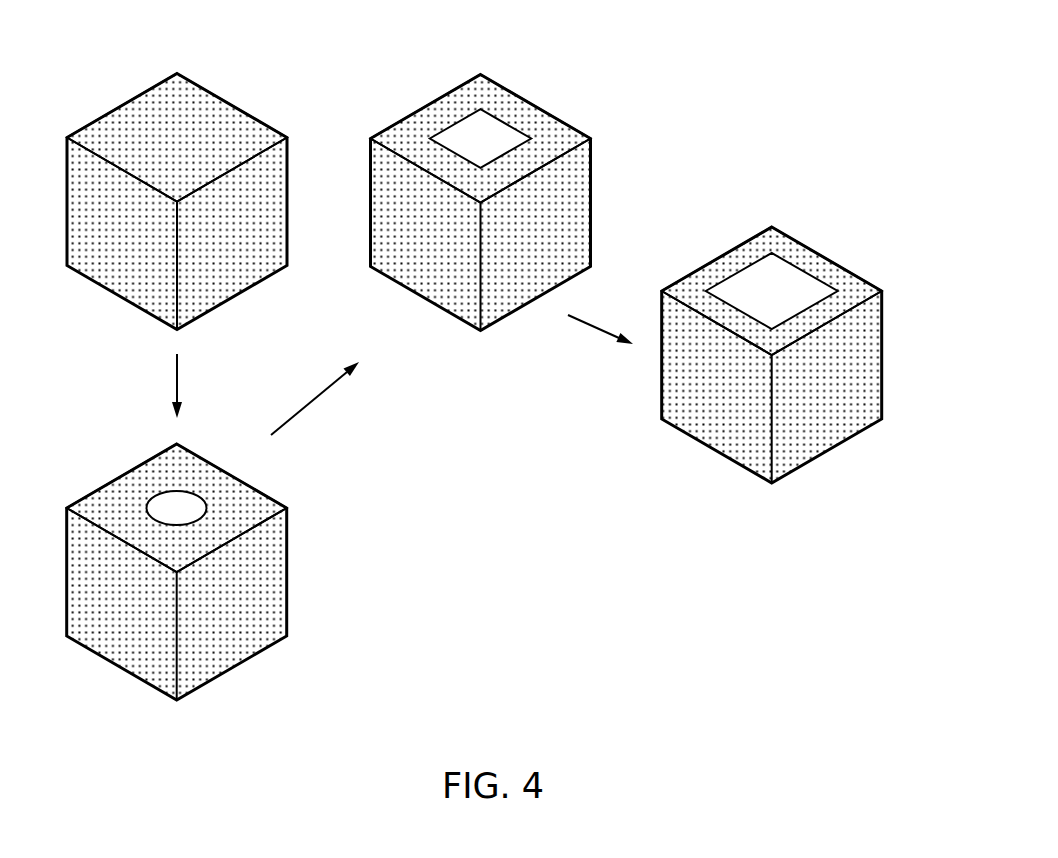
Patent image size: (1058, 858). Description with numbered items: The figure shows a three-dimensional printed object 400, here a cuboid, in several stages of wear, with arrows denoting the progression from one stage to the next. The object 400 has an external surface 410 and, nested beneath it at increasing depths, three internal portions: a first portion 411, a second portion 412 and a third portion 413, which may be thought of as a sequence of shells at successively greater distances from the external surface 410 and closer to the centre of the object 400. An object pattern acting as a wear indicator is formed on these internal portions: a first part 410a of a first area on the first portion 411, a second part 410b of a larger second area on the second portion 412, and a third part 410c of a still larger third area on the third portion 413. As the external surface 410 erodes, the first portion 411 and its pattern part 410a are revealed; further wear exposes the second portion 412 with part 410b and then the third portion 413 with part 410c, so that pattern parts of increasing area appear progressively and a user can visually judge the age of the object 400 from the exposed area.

The three-dimensional printed object 400 is at (255, 75).
The external surface 410 is at (150, 118).
The first part of the object pattern 410a is at (187, 508).
The second part of the object pattern 410b is at (503, 138).
The third part of the object pattern 410c is at (800, 287).
The first portion 411 is at (107, 503).
The second portion 412 is at (407, 133).
The third portion 413 is at (705, 283).